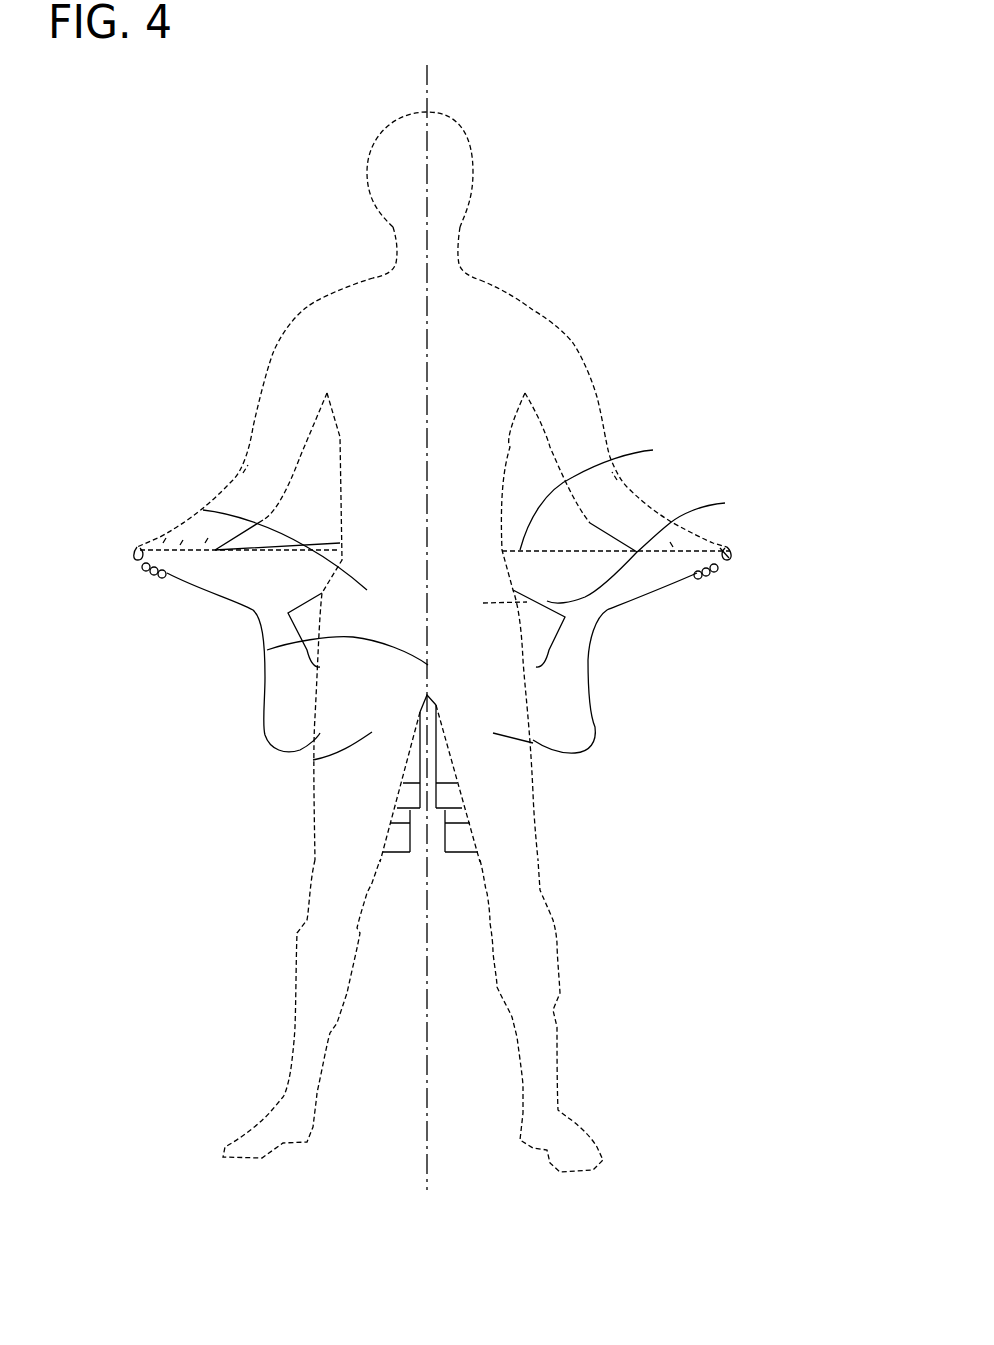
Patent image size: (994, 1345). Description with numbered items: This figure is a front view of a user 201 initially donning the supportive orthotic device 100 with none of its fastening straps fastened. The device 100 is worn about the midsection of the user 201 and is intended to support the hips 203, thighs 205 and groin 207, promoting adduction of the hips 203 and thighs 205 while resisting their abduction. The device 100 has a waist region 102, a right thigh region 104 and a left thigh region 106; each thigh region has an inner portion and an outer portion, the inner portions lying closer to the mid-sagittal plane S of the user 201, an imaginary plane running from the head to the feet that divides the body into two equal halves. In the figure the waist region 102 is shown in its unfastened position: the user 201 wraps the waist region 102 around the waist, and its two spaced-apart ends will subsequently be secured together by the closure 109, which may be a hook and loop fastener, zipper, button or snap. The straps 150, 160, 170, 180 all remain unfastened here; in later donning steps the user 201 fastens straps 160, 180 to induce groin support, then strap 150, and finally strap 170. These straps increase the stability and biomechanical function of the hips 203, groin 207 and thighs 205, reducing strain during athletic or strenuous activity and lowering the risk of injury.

The supportive orthotic device 100 is at (445, 652).
The waist region 102 is at (653, 450).
The right thigh region 104 is at (263, 677).
The left thigh region 106 is at (597, 693).
The closure 109 is at (730, 560).
The strap 150 is at (390, 825).
The strap 160 is at (403, 783).
The strap 170 is at (472, 825).
The strap 180 is at (457, 783).
The user 201 is at (527, 283).
The hips 203 is at (203, 510).
The thighs 205 is at (313, 760).
The groin 207 is at (267, 650).
The mid-sagittal plane S is at (427, 93).